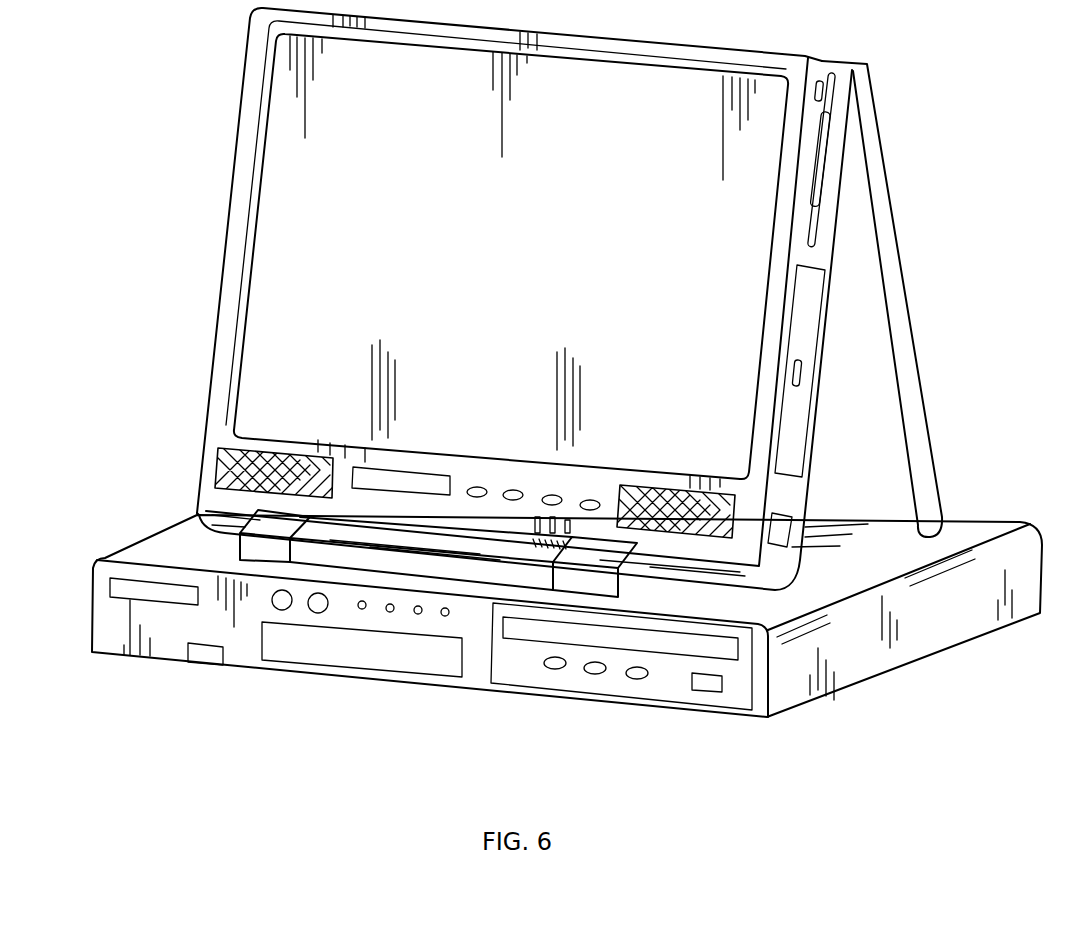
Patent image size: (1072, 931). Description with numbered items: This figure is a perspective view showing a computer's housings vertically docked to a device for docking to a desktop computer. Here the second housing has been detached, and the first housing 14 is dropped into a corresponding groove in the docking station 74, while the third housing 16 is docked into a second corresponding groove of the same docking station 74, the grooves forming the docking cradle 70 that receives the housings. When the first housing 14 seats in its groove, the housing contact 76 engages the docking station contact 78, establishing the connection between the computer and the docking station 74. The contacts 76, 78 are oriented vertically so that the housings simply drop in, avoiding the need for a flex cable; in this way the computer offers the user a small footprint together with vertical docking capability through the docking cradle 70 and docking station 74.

The first housing 14 is at (226, 157).
The third housing 16 is at (890, 258).
The docking cradle 70 is at (240, 553).
The docking station 74 is at (867, 667).
The housing contact 76 is at (569, 522).
The docking station contact 78 is at (530, 536).